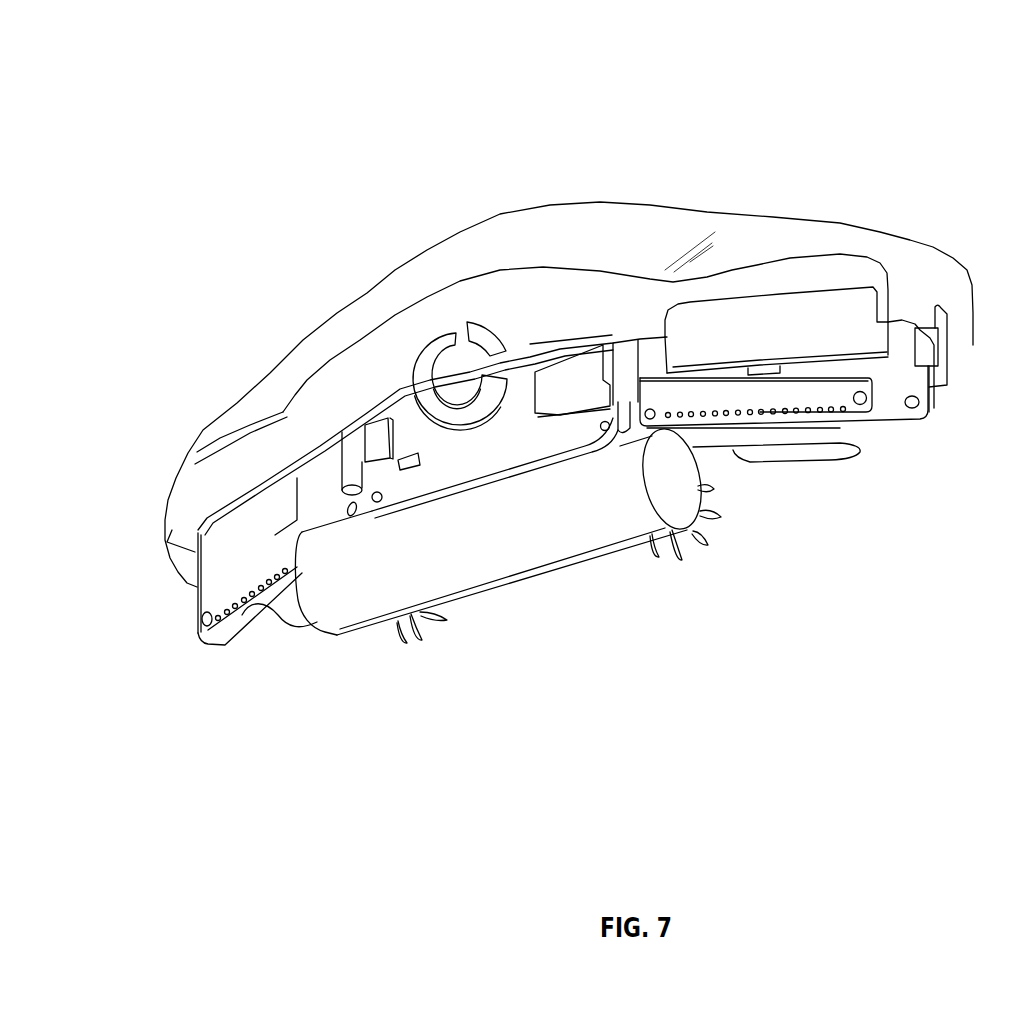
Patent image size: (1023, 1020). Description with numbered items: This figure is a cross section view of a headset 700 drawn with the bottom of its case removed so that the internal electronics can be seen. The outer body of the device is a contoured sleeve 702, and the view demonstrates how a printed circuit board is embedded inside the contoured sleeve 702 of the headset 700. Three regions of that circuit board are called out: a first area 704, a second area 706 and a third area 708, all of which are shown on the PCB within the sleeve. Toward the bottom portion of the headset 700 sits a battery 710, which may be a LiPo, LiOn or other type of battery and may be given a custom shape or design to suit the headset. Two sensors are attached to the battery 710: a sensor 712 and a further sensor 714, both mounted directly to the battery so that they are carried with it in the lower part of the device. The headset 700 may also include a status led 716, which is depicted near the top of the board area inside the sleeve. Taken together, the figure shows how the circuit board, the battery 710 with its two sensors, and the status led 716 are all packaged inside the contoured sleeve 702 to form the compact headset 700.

The headset 700 is at (810, 63).
The contoured sleeve 702 is at (360, 295).
The first area 704 is at (923, 434).
The second area 706 is at (520, 373).
The third area 708 is at (210, 588).
The battery 710 is at (553, 566).
The sensor 712 is at (705, 542).
The sensor 714 is at (418, 638).
The status led 716 is at (470, 373).